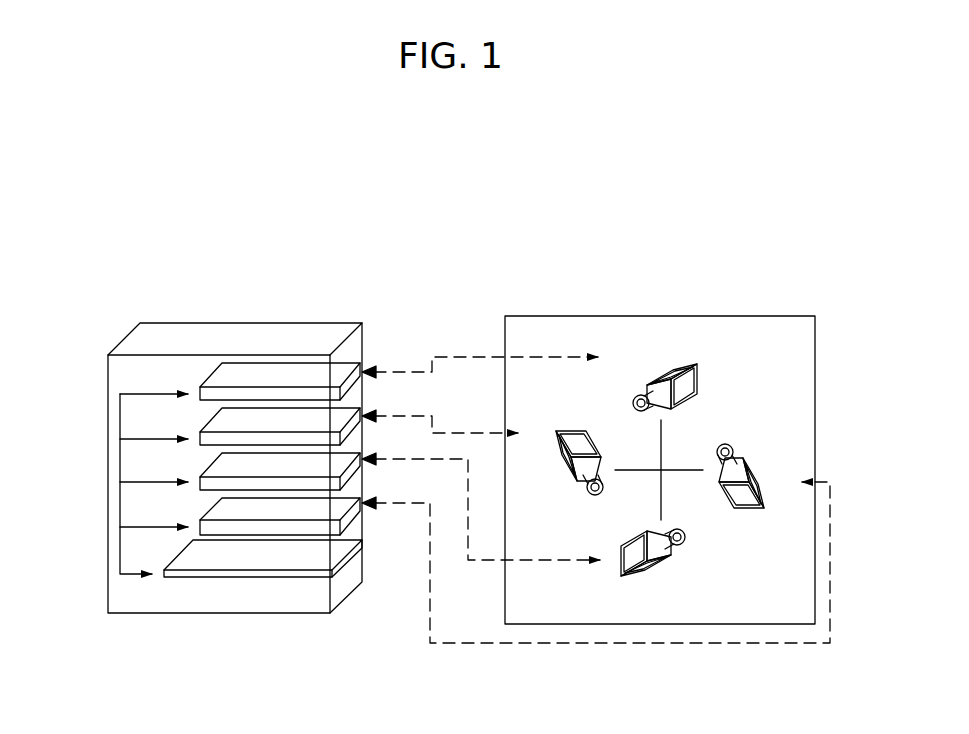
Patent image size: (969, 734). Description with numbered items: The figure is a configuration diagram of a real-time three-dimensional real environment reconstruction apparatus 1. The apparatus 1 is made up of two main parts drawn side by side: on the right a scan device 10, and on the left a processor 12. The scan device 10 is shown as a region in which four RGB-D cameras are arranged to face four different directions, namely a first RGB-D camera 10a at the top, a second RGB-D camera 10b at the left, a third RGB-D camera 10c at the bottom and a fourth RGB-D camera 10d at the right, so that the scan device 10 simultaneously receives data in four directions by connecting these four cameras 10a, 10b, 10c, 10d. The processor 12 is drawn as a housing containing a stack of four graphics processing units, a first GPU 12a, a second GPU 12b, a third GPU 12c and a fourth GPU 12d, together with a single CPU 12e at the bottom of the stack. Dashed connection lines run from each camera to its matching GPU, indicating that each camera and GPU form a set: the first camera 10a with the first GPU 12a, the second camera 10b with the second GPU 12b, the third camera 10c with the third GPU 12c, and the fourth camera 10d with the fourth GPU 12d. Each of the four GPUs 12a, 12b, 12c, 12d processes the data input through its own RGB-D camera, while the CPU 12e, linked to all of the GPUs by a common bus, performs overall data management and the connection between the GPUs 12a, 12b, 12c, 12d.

The real-time 3D real environment reconstruction apparatus 1 is at (600, 205).
The scan device 10 is at (658, 315).
The RGB-D camera 1 10a is at (693, 385).
The RGB-D camera 2 10b is at (572, 435).
The RGB-D camera 3 10c is at (625, 562).
The RGB-D camera 4 10d is at (748, 510).
The processor 12 is at (248, 322).
The GPU 1 12a is at (212, 382).
The GPU 2 12b is at (210, 418).
The GPU 3 12c is at (210, 463).
The GPU 4 12d is at (210, 508).
The CPU 12e is at (178, 553).